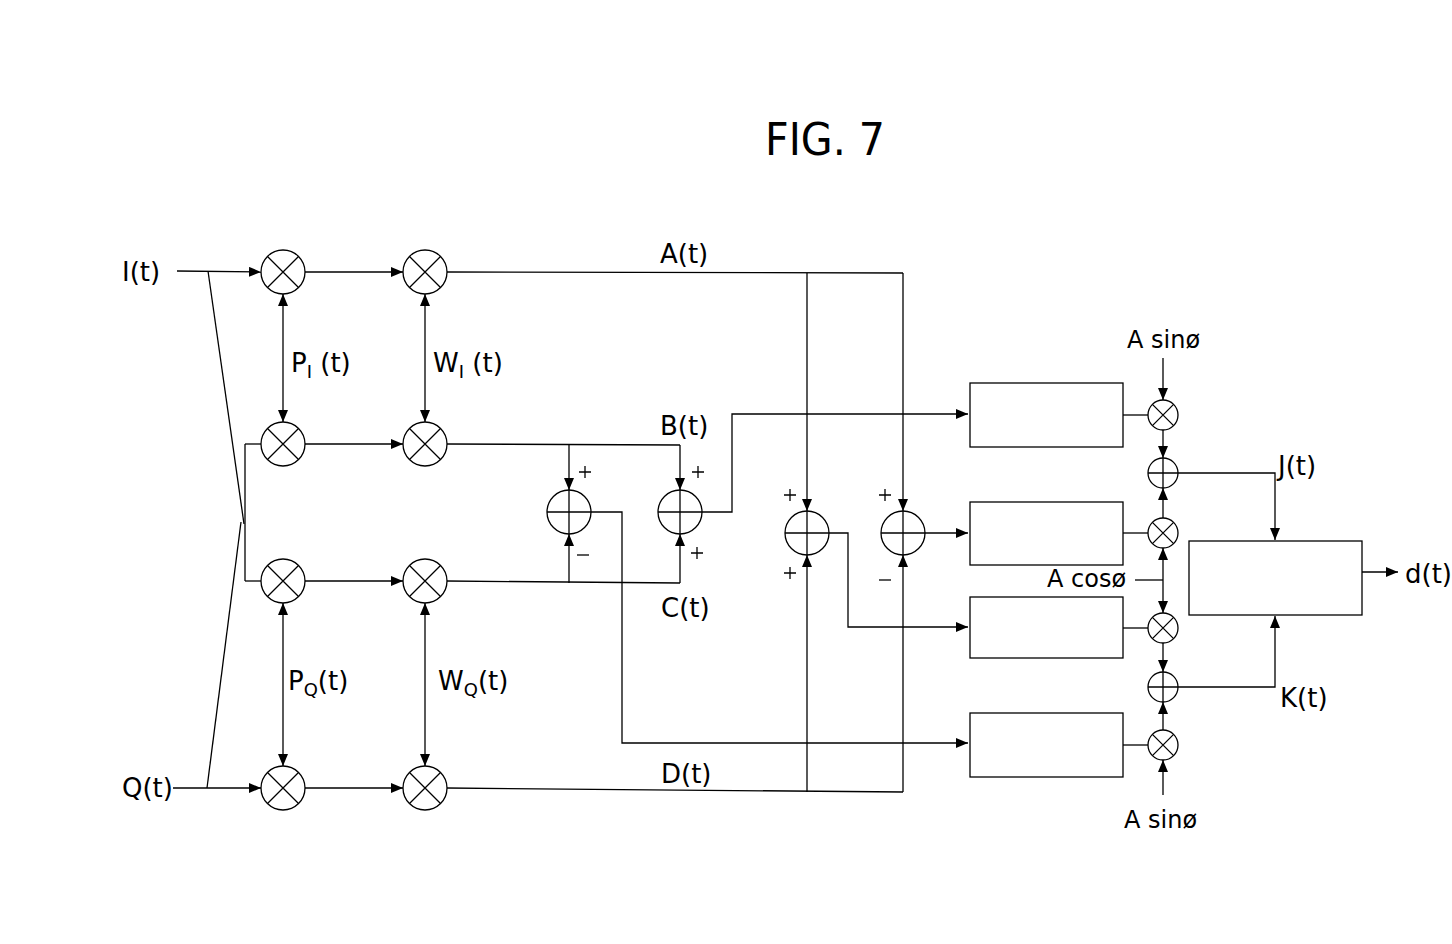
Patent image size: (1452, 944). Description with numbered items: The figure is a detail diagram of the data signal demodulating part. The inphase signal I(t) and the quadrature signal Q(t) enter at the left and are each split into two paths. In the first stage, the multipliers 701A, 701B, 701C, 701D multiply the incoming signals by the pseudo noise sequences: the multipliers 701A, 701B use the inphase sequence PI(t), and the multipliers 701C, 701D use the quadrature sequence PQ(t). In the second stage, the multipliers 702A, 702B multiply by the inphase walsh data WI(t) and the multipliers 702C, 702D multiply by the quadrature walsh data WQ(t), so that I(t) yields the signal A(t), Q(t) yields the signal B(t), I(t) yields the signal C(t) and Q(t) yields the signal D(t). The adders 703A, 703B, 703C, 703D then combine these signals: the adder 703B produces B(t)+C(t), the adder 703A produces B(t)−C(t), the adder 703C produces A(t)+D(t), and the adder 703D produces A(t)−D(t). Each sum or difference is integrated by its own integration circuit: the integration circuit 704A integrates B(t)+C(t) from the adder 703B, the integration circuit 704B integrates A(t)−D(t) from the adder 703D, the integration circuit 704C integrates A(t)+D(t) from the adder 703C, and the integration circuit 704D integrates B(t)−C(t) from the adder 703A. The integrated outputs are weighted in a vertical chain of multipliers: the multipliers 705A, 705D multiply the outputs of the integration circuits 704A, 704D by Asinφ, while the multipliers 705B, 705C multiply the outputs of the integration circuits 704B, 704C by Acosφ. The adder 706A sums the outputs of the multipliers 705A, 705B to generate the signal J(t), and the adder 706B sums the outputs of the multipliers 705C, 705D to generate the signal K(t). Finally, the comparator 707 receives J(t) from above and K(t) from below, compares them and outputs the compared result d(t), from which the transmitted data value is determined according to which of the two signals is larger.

The multiplier 701A is at (299, 257).
The multiplier 701B is at (299, 429).
The multiplier 701C is at (299, 566).
The multiplier 701D is at (299, 773).
The multiplier 702A is at (441, 257).
The multiplier 702B is at (441, 429).
The multiplier 702C is at (441, 566).
The multiplier 702D is at (441, 773).
The adder 703A is at (589, 496).
The adder 703B is at (696, 528).
The adder 703C is at (822, 518).
The adder 703D is at (919, 549).
The integration circuit 704A is at (1020, 383).
The integration circuit 704B is at (1020, 502).
The integration circuit 704C is at (1020, 658).
The integration circuit 704D is at (1020, 777).
The multiplier 705A is at (1173, 403).
The multiplier 705B is at (1173, 521).
The multiplier 705C is at (1172, 641).
The multiplier 705D is at (1172, 757).
The adder 706A is at (1173, 461).
The adder 706B is at (1172, 699).
The comparator 707 is at (1304, 541).